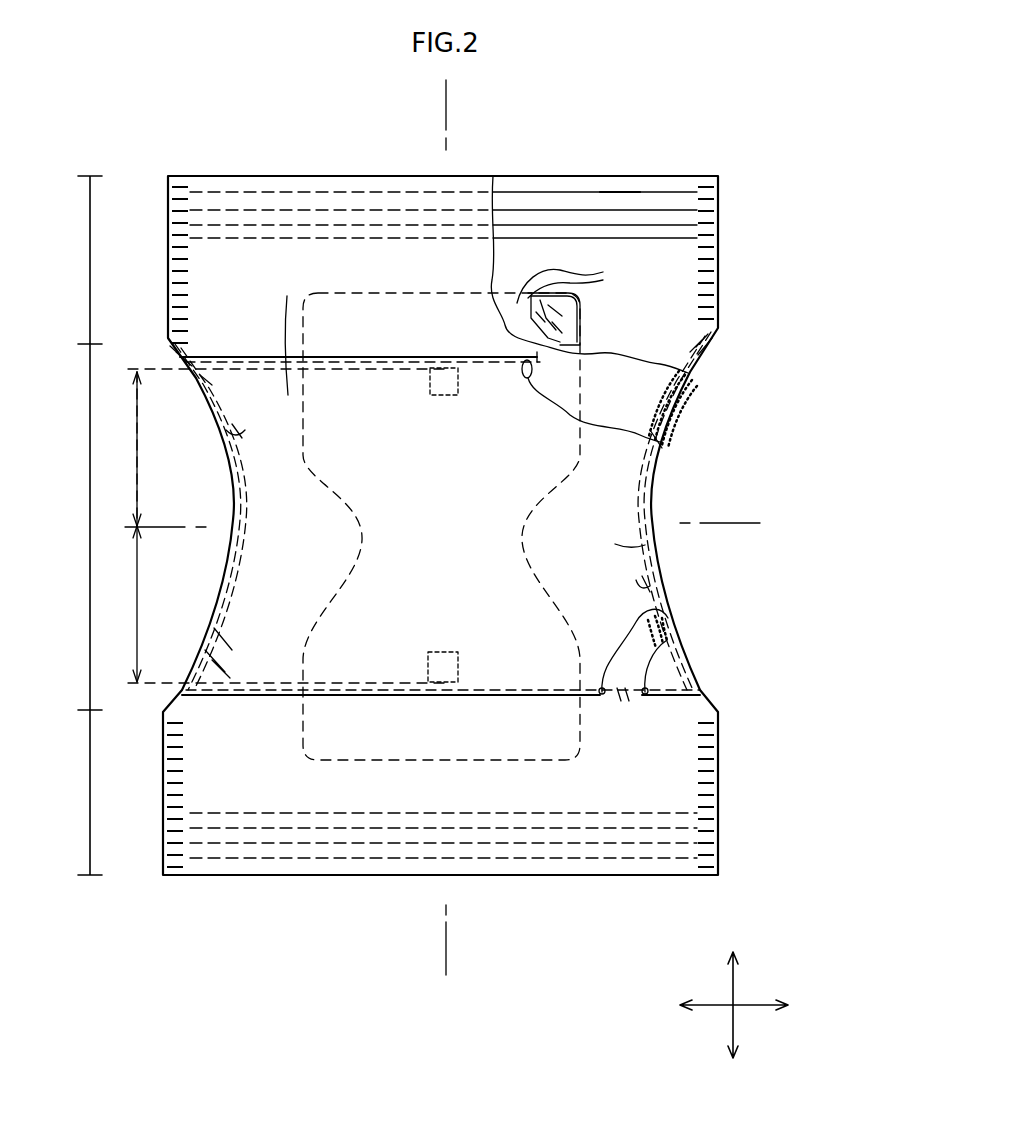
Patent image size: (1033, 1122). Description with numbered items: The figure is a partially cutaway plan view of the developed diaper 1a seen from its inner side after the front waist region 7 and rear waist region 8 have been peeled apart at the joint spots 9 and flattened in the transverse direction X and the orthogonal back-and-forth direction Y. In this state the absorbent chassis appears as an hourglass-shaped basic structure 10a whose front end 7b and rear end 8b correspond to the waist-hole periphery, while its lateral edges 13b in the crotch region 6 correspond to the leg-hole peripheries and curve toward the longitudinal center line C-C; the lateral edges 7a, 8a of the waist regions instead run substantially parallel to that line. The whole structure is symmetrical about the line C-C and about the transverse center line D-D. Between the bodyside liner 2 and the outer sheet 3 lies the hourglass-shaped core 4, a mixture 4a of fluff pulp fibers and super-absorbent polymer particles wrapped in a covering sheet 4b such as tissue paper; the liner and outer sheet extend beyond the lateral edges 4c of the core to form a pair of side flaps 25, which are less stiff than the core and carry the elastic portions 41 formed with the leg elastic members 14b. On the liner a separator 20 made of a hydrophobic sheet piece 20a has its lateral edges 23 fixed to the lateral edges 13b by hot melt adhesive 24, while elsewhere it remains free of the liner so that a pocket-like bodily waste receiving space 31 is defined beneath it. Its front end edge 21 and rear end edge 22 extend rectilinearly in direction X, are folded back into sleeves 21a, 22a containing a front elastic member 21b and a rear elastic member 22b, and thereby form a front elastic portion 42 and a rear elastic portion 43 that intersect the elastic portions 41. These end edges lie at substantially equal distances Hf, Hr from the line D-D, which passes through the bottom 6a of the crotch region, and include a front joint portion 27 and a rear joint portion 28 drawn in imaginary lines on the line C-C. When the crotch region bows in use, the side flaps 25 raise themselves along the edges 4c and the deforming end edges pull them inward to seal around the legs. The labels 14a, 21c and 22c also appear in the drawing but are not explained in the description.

The developed diaper 1a is at (748, 102).
The bodyside liner 2 is at (318, 176).
The outer sheet 3 is at (668, 176).
The core 4 is at (591, 300).
The mixture of fluff pulp fibers and super-absorbent polymer particles 4a is at (573, 310).
The covering sheet 4b is at (576, 279).
The lateral edges of the core 4c is at (365, 541).
The crotch region 6 is at (90, 532).
The bottom of the crotch region 6a is at (648, 545).
The front waist region 7 is at (90, 792).
The lateral edges of the front waist region 7a is at (182, 823).
The front end 7b is at (325, 876).
The rear waist region 8 is at (90, 260).
The lateral edges of the rear waist region 8a is at (185, 232).
The rear end 8b is at (380, 176).
The joint spots 9 is at (718, 286).
The basic structure 10a is at (283, 176).
The lateral edges of the crotch region 13b is at (218, 398).
The target tape landing zone 14a is at (620, 192).
The leg elastic members 14b is at (705, 358).
The separator 20 is at (252, 352).
The sheet piece 20a is at (286, 331).
The front end edge 21 is at (278, 697).
The sleeve 21a is at (647, 696).
The front elastic member 21b is at (606, 697).
The rear fixed edge middle portion 21c is at (483, 697).
The rear end edge 22 is at (262, 364).
The sleeve 22a is at (529, 380).
The rear elastic member 22b is at (522, 357).
The front fixing line middle portion 22c is at (400, 360).
The lateral edges of the separator 23 is at (668, 642).
The hot melt adhesive 24 is at (690, 382).
The side flaps 25 is at (660, 444).
The front joint portion 27 is at (442, 650).
The rear joint portion 28 is at (430, 385).
The bodily waste receiving space 31 is at (345, 697).
The elastic portions 41 is at (238, 433).
The front elastic portion 42 is at (553, 697).
The rear elastic portion 43 is at (357, 362).
The distance of the rear end edge from the transverse center line Hr is at (146, 460).
The distance of the front end edge from the transverse center line Hf is at (147, 594).
The transverse center line D is at (172, 526).
The longitudinal center line C is at (448, 104).
The transverse direction X is at (745, 1002).
The back-and-forth direction Y is at (735, 1024).